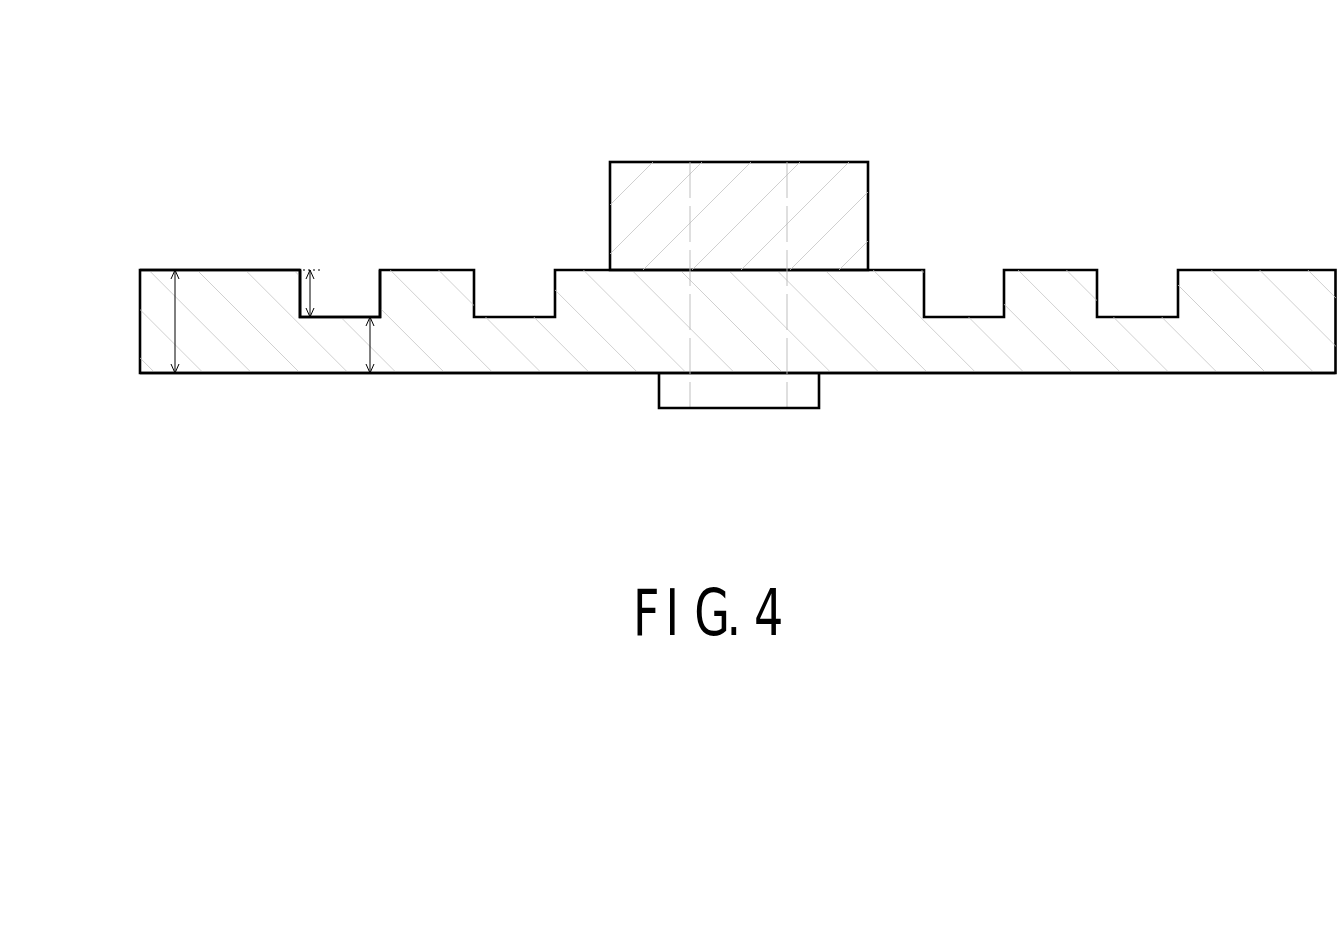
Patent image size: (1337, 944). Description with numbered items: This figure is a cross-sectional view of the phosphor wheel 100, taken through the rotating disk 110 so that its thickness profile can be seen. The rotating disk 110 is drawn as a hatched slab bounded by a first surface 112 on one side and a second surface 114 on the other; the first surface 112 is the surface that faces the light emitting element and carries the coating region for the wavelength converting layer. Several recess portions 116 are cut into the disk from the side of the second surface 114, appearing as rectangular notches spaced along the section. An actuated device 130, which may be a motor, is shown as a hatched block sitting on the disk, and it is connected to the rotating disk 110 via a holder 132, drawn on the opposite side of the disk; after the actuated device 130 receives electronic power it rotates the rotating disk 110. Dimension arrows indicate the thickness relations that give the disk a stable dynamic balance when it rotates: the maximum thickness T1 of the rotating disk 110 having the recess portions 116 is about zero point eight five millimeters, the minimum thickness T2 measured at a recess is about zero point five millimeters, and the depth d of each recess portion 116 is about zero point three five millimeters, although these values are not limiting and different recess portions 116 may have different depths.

The phosphor wheel 100 is at (190, 69).
The rotating disk 110 is at (140, 321).
The first surface 112 is at (277, 373).
The second surface 114 is at (220, 269).
The recess portions 116 is at (340, 316).
The actuated device 130 is at (632, 167).
The holder 132 is at (668, 408).
The maximum thickness T1 is at (175, 342).
The minimum thickness T2 is at (370, 342).
The depth d is at (300, 298).